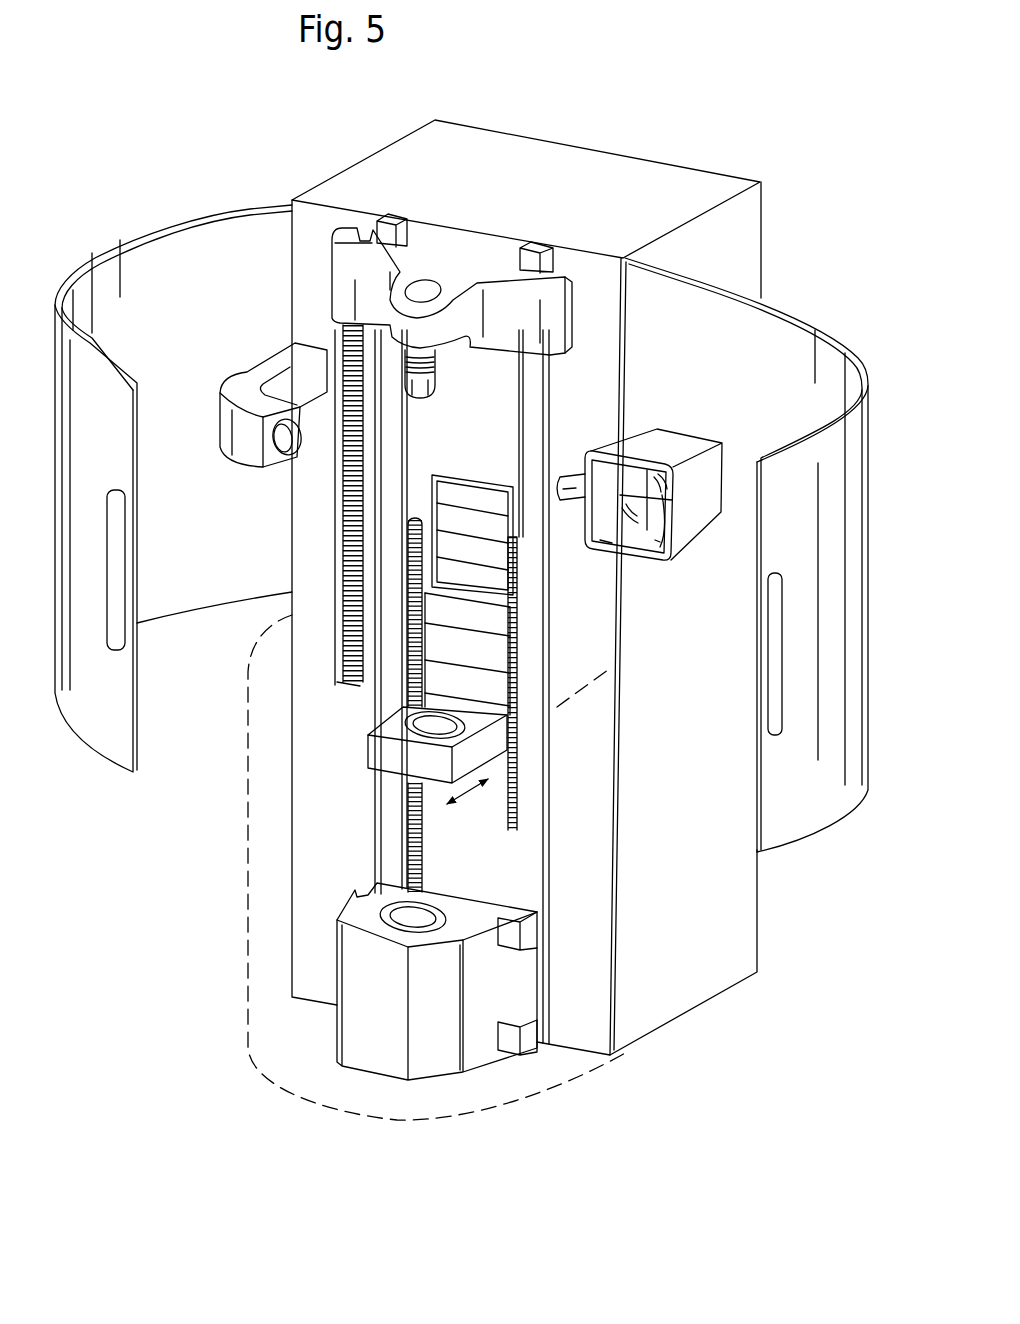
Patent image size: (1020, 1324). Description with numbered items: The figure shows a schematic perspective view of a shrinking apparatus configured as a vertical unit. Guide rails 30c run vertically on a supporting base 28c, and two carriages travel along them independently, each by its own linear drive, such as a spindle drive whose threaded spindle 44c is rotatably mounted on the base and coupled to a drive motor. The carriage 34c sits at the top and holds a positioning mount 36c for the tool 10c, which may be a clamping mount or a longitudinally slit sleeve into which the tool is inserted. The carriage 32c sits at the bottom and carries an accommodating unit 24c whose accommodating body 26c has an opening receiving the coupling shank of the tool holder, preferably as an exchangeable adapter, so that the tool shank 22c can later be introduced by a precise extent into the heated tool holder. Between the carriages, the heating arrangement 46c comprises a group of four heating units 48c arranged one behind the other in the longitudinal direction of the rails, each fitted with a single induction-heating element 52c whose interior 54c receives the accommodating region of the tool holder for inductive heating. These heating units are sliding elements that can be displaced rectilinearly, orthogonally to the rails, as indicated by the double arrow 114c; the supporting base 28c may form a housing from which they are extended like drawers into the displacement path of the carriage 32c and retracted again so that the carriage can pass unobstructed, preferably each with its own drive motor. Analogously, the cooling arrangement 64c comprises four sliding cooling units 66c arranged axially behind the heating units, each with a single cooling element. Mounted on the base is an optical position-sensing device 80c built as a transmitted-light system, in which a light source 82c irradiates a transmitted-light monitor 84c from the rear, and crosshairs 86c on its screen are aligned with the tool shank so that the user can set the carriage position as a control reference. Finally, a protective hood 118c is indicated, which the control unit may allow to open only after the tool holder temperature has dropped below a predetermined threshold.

The tool 10c is at (444, 370).
The tool shank 22c is at (422, 397).
The accommodating unit 24c is at (393, 933).
The accommodating body 26c is at (395, 908).
The supporting base 28c is at (693, 967).
The guide rails 30c is at (388, 832).
The carriage 32c is at (468, 1057).
The carriage 34c is at (577, 298).
The positioning mount 36c is at (385, 347).
The threaded spindle 44c is at (357, 538).
The heating arrangement 46c is at (524, 687).
The heating unit 48c is at (380, 754).
The induction-heating element 52c is at (470, 713).
The interior of the induction-heating element 54c is at (420, 722).
The cooling arrangement 64c is at (530, 557).
The cooling unit 66c is at (473, 547).
The optical position-sensing device 80c is at (705, 432).
The light source 82c is at (280, 455).
The transmitted-light monitor 84c is at (672, 494).
The crosshairs 86c is at (660, 503).
The double arrow 114c is at (465, 800).
The protective hood 118c is at (790, 838).